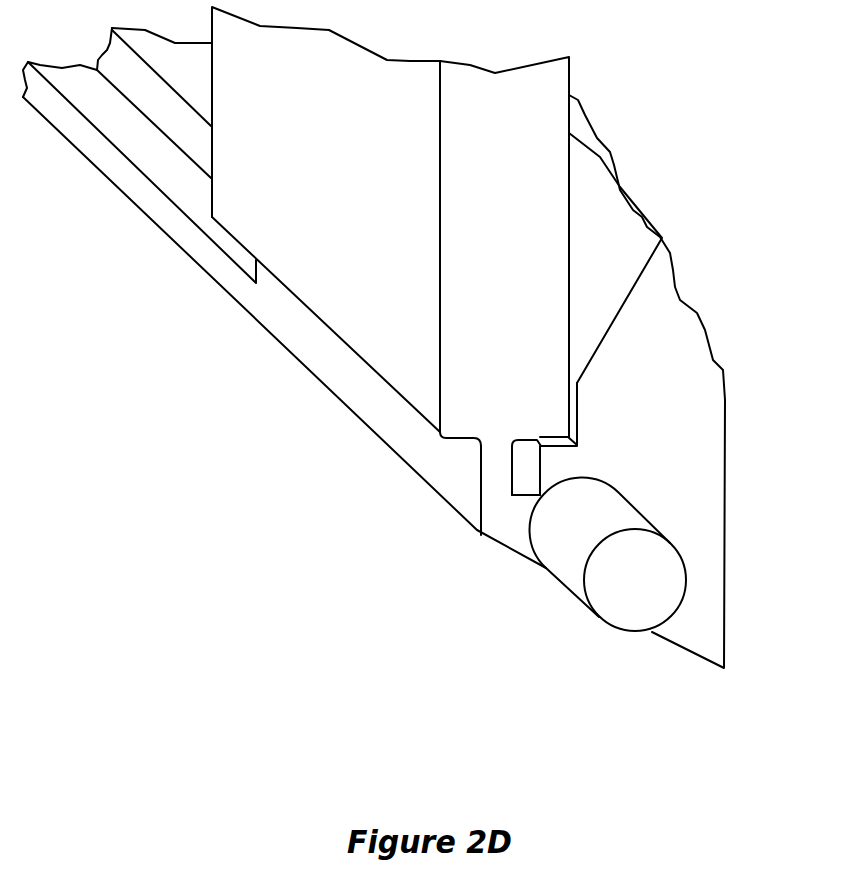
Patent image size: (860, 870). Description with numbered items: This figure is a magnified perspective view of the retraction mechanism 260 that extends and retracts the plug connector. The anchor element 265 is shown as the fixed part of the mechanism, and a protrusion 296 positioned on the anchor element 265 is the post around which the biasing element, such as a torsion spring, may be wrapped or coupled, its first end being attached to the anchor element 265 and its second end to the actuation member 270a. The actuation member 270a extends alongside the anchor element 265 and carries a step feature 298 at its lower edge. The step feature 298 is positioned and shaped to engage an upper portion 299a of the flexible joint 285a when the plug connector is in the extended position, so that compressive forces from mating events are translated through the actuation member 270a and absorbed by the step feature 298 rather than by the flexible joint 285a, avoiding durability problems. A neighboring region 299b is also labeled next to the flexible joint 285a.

The retraction mechanism 260 is at (190, 347).
The actuation member 270a is at (533, 238).
The step feature 298 is at (570, 449).
The anchor element 265 is at (698, 515).
The protrusion 296 is at (633, 598).
The notch 299b is at (457, 440).
The flexible joint 285a is at (477, 497).
The upper portion 299a is at (525, 447).